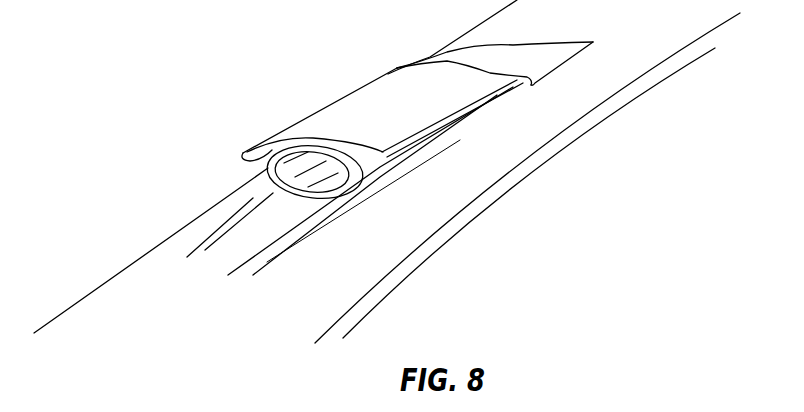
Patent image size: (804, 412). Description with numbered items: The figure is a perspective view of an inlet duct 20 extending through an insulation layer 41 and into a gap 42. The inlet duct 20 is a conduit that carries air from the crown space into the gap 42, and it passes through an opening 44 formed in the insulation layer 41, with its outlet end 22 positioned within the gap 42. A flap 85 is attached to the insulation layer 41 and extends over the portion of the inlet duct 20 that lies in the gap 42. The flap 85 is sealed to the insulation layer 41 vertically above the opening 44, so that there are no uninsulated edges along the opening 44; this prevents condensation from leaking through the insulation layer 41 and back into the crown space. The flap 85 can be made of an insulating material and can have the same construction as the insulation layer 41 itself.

The inlet duct 20 is at (443, 150).
The outlet end 22 is at (280, 190).
The insulation layer 41 is at (140, 303).
The gap 42 is at (97, 131).
The opening 44 is at (492, 102).
The flap 85 is at (373, 103).